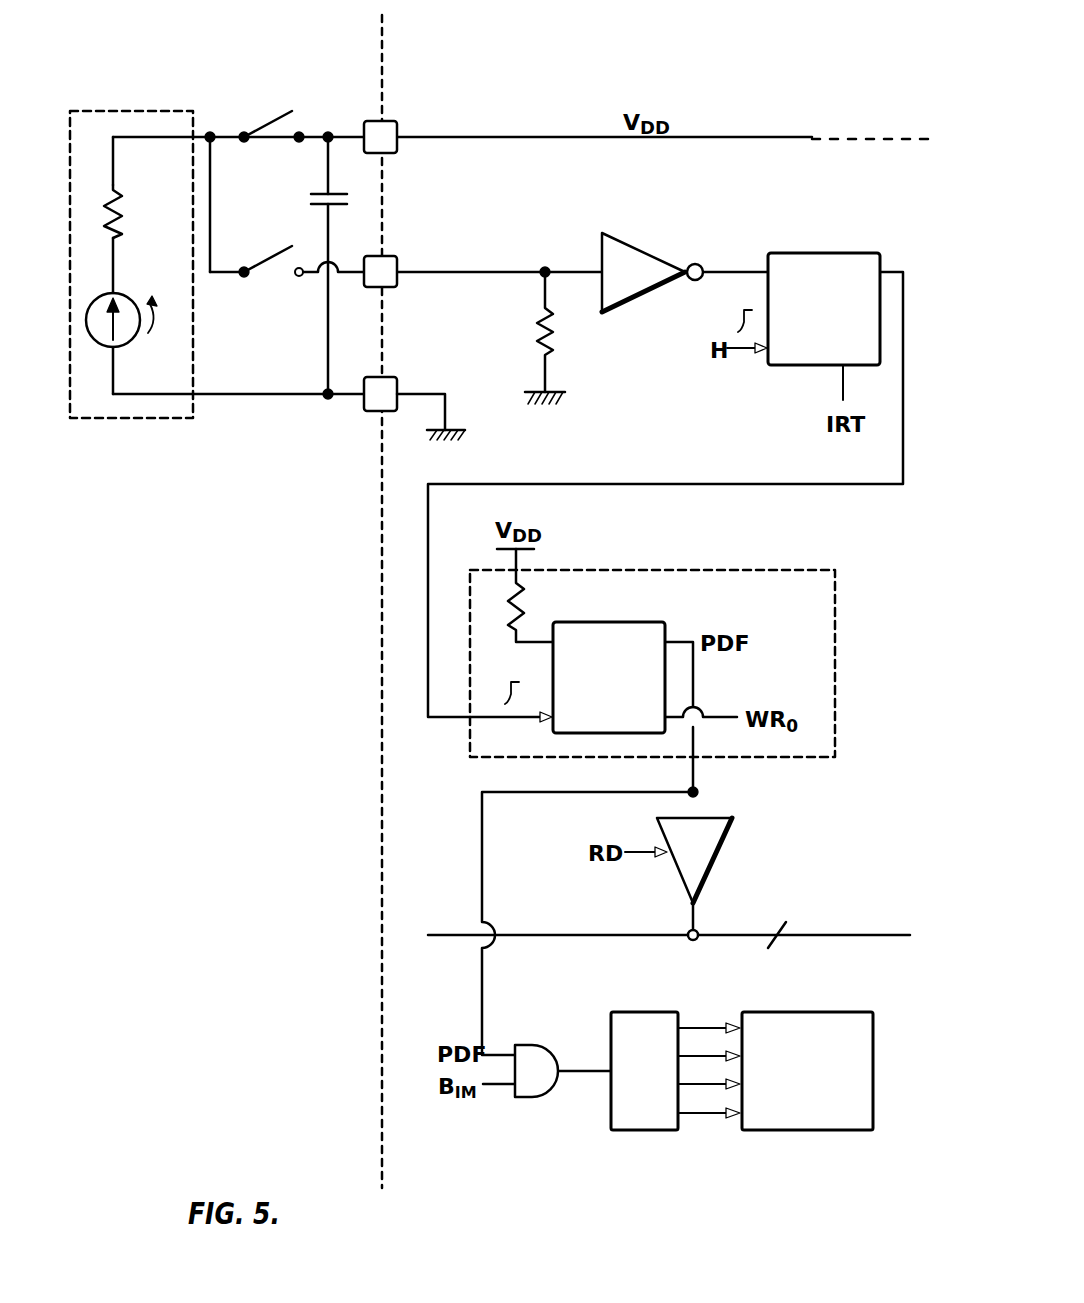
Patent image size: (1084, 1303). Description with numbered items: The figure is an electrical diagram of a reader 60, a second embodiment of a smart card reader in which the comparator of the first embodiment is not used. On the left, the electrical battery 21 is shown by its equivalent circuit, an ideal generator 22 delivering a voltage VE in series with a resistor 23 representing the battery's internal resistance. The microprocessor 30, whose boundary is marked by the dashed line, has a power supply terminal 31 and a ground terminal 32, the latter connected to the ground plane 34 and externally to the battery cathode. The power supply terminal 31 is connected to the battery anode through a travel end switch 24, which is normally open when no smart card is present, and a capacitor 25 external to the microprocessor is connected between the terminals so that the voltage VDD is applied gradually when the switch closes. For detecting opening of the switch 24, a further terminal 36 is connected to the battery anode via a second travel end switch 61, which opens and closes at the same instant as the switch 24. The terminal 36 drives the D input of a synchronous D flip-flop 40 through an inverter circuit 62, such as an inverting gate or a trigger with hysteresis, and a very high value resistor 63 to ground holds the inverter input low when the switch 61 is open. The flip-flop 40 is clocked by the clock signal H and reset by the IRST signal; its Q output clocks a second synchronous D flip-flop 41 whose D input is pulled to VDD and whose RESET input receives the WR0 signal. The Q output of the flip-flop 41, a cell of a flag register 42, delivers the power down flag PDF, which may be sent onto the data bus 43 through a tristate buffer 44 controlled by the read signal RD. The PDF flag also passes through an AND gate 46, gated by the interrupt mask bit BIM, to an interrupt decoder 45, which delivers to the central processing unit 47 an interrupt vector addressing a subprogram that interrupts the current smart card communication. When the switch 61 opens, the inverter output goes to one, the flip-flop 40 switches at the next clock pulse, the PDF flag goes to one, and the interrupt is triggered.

The electrical battery 21 is at (160, 111).
The ideal generator 22 is at (126, 343).
The resistor 23 is at (120, 203).
The travel end switch 24 is at (288, 112).
The capacitor 25 is at (322, 193).
The microprocessor 30 is at (378, 686).
The power supply terminal 31 is at (372, 121).
The ground terminal 32 is at (375, 411).
The ground plane 34 is at (455, 427).
The terminal 36 is at (392, 287).
The synchronous D flip-flop 40 is at (815, 253).
The second synchronous D flip-flop 41 is at (633, 622).
The flag register 42 is at (832, 757).
The data bus 43 is at (817, 935).
The tristate buffer 44 is at (724, 838).
The interrupt decoder 45 is at (633, 1130).
The AND gate 46 is at (540, 1097).
The central processing unit 47 is at (850, 1130).
The reader 60 is at (178, 776).
The second travel end switch 61 is at (290, 250).
The inverter circuit 62 is at (666, 262).
The resistor 63 is at (548, 337).